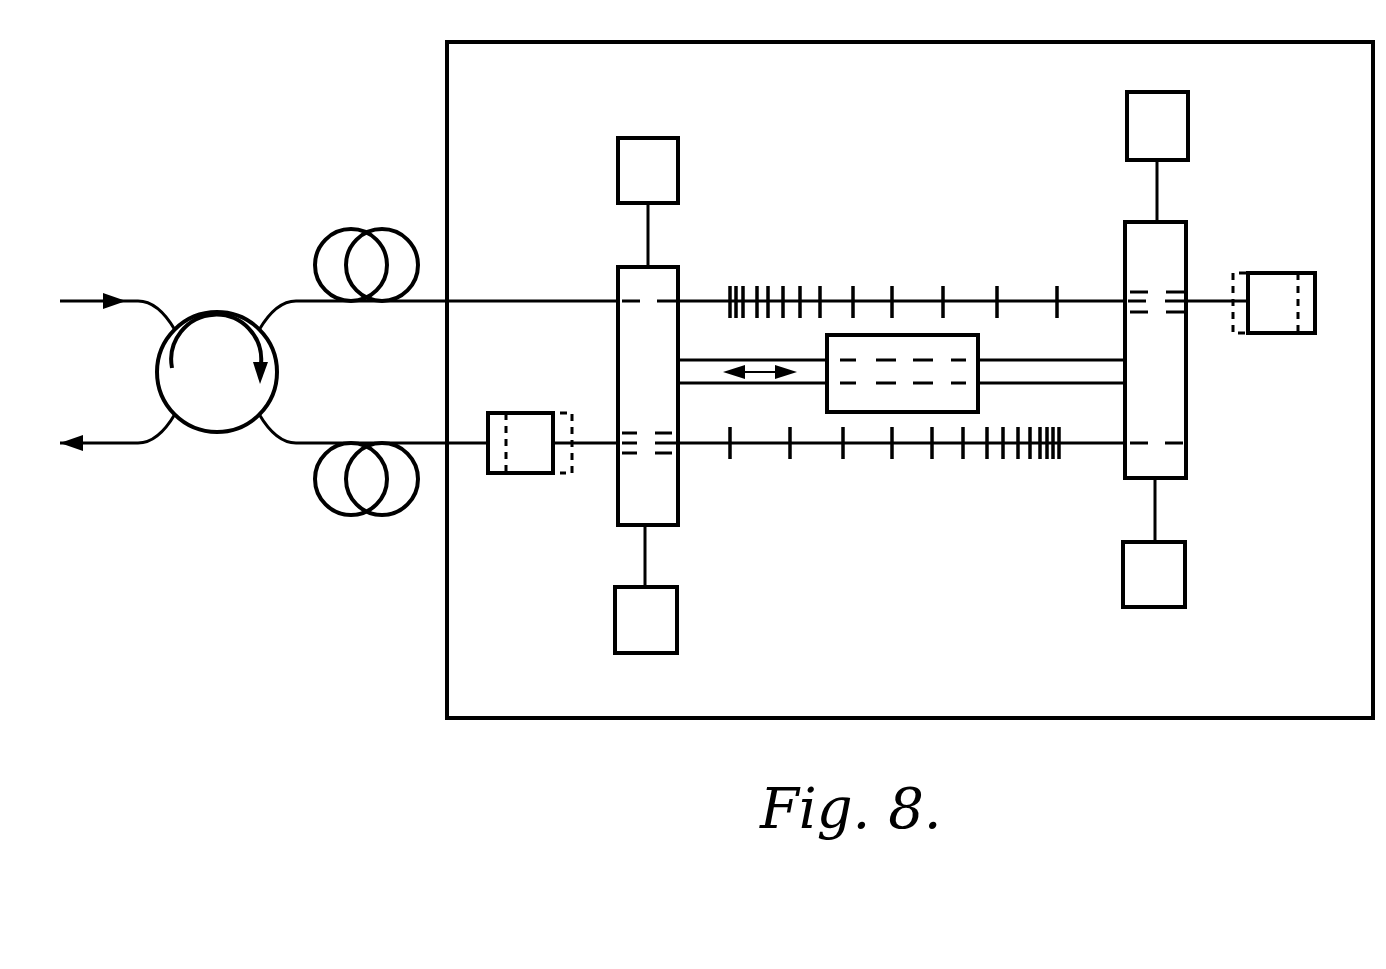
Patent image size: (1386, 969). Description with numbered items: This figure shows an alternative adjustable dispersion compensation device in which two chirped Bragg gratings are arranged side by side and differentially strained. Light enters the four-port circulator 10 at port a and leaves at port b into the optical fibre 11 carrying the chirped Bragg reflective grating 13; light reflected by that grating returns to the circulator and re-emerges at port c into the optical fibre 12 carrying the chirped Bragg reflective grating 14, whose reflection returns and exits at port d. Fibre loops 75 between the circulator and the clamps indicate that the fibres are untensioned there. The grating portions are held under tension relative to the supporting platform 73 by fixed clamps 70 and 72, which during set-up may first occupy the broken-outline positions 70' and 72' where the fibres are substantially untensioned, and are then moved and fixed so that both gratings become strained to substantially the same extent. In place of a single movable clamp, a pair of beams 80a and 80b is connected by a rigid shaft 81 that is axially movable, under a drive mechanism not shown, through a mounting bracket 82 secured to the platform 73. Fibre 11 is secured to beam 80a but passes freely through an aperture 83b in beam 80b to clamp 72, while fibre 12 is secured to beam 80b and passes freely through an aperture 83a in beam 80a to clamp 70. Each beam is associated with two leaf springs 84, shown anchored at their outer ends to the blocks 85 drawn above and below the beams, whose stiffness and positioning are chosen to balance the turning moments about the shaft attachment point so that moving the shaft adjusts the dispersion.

The four-port circulator 10 is at (207, 358).
The optical fibre 11 is at (585, 300).
The optical fibre 12 is at (1102, 447).
The chirped Bragg reflective grating 13 is at (853, 290).
The chirped Bragg reflective grating 14 is at (892, 452).
The clamp 70 is at (520, 496).
The initial clamp position 70' is at (582, 408).
The clamp 72 is at (1301, 258).
The initial clamp position 72' is at (1222, 331).
The supporting platform 73 is at (445, 667).
The fibre loops 75 is at (378, 230).
The beam 80a is at (635, 485).
The beam 80b is at (1173, 262).
The rigid shaft 81 is at (1050, 372).
The mounting bracket 82 is at (875, 412).
The aperture 83a is at (658, 455).
The aperture 83b is at (1142, 290).
The leaf springs 84 is at (648, 248).
The adjustment drives 85 is at (655, 160).